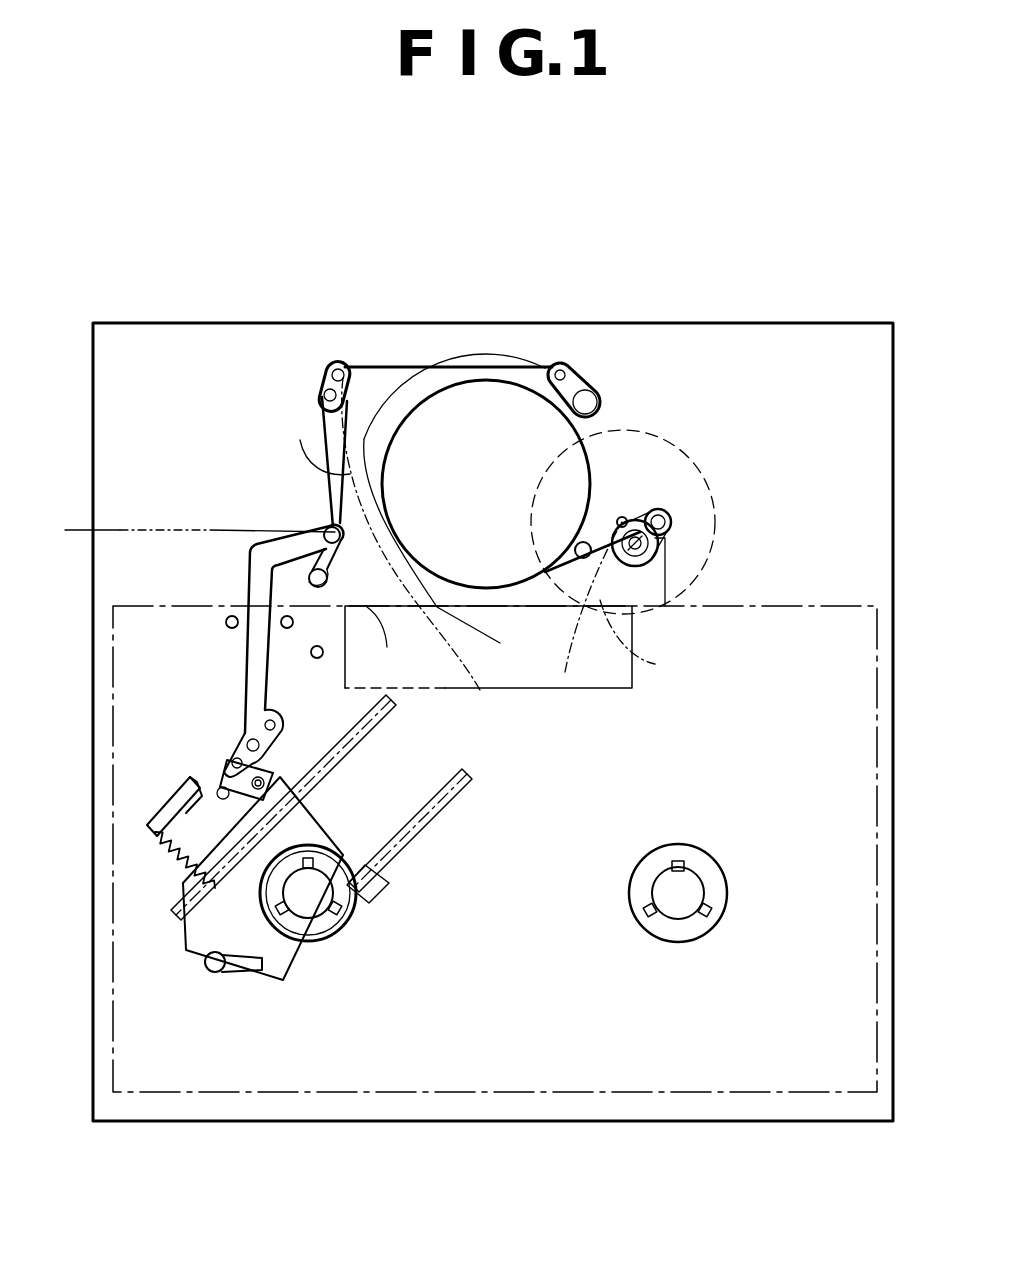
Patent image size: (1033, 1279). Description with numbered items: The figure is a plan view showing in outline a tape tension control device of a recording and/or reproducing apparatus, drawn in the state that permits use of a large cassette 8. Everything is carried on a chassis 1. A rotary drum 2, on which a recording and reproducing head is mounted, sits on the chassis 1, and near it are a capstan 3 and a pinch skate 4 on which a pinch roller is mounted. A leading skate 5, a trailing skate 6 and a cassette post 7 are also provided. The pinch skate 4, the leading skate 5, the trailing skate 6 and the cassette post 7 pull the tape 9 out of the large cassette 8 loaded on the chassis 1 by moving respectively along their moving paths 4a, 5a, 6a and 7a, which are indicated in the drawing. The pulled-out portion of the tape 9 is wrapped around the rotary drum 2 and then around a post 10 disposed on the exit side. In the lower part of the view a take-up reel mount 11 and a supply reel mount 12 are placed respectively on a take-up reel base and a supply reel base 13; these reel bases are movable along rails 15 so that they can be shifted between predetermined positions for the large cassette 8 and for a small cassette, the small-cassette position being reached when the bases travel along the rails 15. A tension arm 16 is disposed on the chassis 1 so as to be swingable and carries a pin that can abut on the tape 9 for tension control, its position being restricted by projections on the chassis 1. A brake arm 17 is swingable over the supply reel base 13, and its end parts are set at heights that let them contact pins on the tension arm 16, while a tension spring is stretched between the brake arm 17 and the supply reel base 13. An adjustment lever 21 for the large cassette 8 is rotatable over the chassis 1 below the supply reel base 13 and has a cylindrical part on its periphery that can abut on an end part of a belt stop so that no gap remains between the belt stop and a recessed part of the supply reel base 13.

The chassis 1 is at (820, 323).
The rotary drum 2 is at (470, 378).
The capstan 3 is at (624, 516).
The pinch skate 4 is at (665, 518).
The moving path 4a is at (655, 664).
The leading skate 5 is at (592, 368).
The moving path 5a is at (380, 367).
The trailing skate 6 is at (322, 365).
The moving path 6a is at (300, 440).
The cassette post 7 is at (285, 542).
The moving path 7a is at (305, 592).
The large cassette 8 is at (853, 606).
The tape 9 is at (667, 545).
The post 10 is at (578, 545).
The take-up reel mount 11 is at (718, 868).
The supply reel mount 12 is at (370, 893).
The supply reel base 13 is at (313, 963).
The rails 15 is at (348, 758).
The tension arm 16 is at (243, 676).
The brake arm 17 is at (188, 790).
The adjustment lever 21 is at (212, 975).